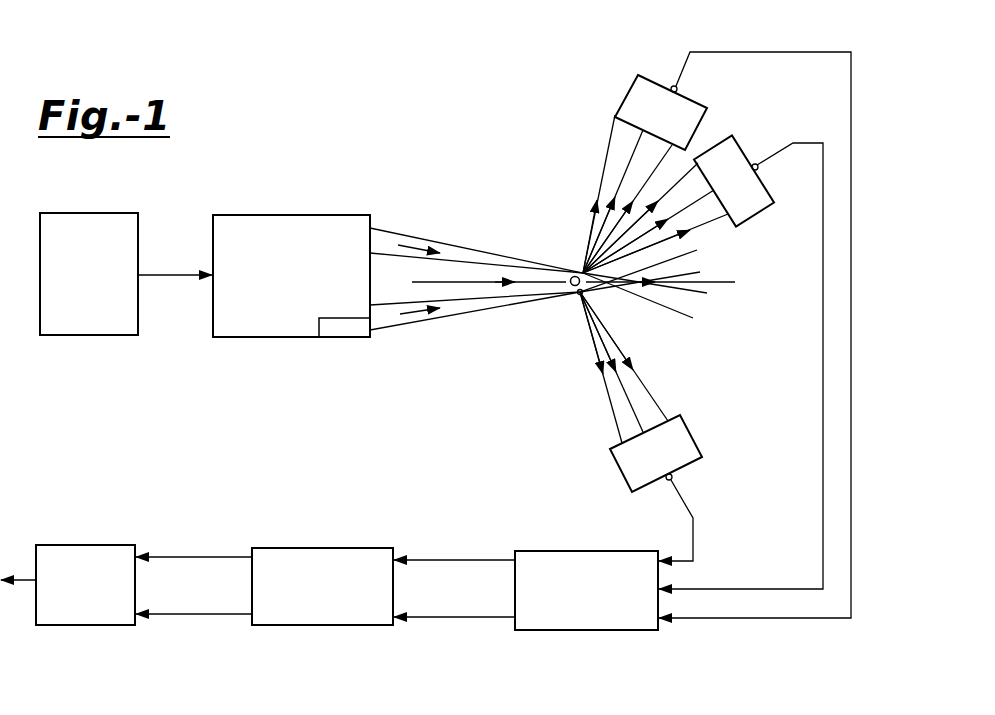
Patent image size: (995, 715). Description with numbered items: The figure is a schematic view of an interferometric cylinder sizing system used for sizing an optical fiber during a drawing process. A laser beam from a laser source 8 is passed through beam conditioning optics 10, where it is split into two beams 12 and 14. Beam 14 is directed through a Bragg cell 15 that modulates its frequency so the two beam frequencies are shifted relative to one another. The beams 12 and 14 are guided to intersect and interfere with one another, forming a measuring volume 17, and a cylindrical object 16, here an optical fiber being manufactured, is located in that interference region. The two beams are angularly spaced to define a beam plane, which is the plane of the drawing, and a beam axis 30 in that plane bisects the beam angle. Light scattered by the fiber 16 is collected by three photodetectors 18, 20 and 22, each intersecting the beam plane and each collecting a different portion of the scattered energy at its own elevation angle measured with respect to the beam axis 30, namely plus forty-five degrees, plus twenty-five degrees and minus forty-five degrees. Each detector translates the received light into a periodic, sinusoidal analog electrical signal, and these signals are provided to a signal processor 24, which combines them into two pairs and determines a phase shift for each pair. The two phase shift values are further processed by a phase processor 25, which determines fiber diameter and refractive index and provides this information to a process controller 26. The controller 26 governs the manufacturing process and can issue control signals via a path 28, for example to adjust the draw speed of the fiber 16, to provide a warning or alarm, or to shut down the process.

The laser source 8 is at (116, 213).
The beam conditioning optics 10 is at (345, 215).
The beam 12 is at (453, 240).
The beam 14 is at (423, 318).
The Bragg cell 15 is at (343, 340).
The cylindrical object 16 is at (566, 270).
The measuring volume 17 is at (574, 294).
The photodetector 18 is at (625, 76).
The photodetector 20 is at (727, 137).
The photodetector 22 is at (700, 442).
The signal processor 24 is at (540, 551).
The phase processor 25 is at (272, 548).
The process controller 26 is at (56, 545).
The path 28 is at (17, 578).
The beam axis 30 is at (735, 283).